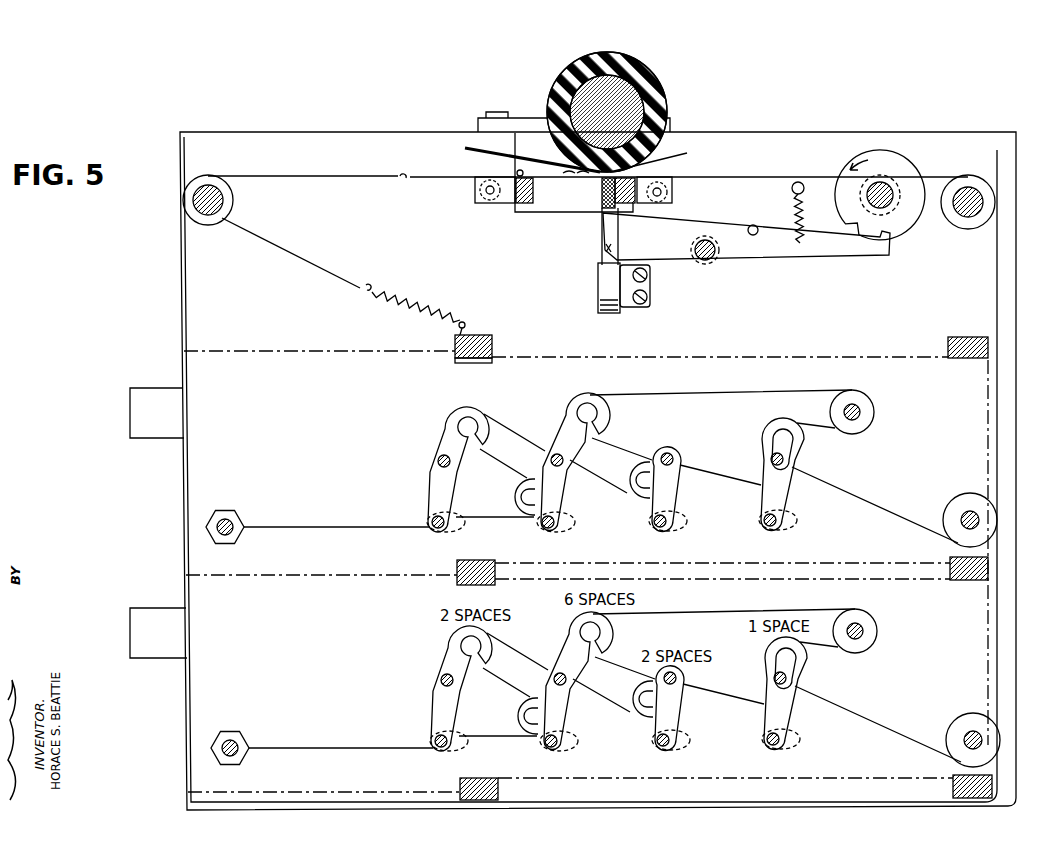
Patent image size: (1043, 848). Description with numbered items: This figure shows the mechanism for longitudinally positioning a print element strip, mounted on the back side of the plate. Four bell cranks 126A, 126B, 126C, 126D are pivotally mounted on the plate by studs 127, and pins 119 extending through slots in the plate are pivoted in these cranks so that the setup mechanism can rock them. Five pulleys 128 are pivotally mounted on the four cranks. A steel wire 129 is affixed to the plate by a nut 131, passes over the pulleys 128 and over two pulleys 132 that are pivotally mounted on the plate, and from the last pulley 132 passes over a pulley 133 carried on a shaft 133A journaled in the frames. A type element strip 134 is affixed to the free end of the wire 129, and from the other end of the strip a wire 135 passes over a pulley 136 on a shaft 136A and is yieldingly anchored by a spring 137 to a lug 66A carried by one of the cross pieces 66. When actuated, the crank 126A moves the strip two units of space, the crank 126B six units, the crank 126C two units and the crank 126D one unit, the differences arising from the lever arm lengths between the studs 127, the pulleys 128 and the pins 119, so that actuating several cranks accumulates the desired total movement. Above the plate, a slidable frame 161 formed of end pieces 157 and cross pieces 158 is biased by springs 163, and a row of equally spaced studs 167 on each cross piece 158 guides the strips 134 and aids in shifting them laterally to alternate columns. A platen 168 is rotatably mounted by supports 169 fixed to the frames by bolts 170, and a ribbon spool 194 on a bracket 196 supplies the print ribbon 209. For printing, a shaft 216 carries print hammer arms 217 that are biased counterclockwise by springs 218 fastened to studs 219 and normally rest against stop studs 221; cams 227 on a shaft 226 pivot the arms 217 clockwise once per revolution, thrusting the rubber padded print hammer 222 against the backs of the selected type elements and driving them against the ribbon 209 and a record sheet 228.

The cross piece 66 is at (492, 346).
The lug 66A is at (466, 324).
The pin 119 is at (432, 528).
The bell crank 126A is at (432, 487).
The bell crank 126B is at (555, 494).
The bell crank 126C is at (668, 498).
The bell crank 126D is at (780, 498).
The stud 127 is at (438, 461).
The pulley 128 is at (464, 405).
The steel wire 129 is at (330, 525).
The nut 131 is at (228, 512).
The pulley 132 is at (868, 398).
The pulley 133 is at (976, 181).
The shaft 133A is at (968, 217).
The type element strip 134 is at (408, 181).
The wire 135 is at (302, 181).
The pulley 136 is at (228, 214).
The shaft 136A is at (212, 186).
The spring 137 is at (440, 306).
The end piece 157 is at (545, 213).
The cross piece 158 is at (535, 193).
The frame 161 is at (497, 225).
The spring 163 is at (483, 196).
The stud 167 is at (516, 172).
The platen 168 is at (660, 100).
The support 169 is at (533, 124).
The bolt 170 is at (486, 114).
The ribbon spool 194 is at (598, 300).
The bracket 196 is at (635, 306).
The print ribbon 209 is at (602, 250).
The shaft 216 is at (710, 260).
The print hammer arm 217 is at (778, 261).
The spring 218 is at (802, 200).
The stud 219 is at (792, 184).
The stop stud 221 is at (757, 226).
The print hammer 222 is at (603, 205).
The shaft 226 is at (886, 208).
The cam 227 is at (900, 168).
The record sheet 228 is at (463, 150).